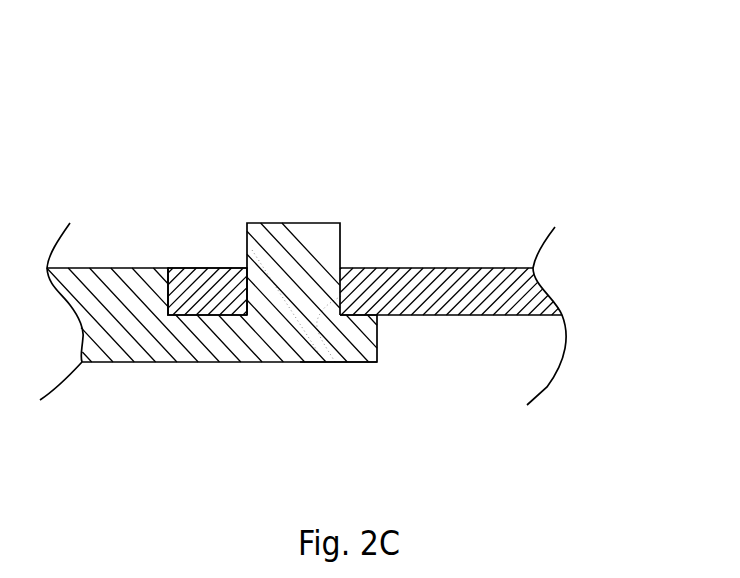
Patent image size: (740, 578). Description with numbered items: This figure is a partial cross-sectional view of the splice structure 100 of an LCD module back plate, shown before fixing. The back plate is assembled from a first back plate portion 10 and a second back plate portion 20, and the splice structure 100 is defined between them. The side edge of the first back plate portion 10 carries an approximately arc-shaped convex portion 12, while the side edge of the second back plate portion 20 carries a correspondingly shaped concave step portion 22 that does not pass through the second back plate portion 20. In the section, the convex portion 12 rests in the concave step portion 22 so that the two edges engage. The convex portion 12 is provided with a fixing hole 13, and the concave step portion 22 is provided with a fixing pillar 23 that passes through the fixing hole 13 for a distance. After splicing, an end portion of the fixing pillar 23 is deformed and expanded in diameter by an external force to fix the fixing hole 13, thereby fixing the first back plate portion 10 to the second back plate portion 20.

The splice structure 100 is at (688, 47).
The first back plate portion 10 is at (489, 262).
The convex portion 12 is at (213, 267).
The fixing hole 13 is at (335, 362).
The second back plate portion 20 is at (105, 253).
The concave step portion 22 is at (192, 267).
The fixing pillar 23 is at (285, 222).